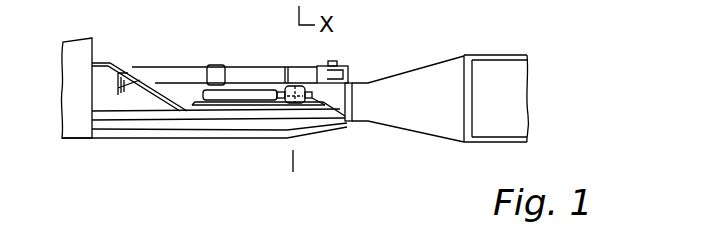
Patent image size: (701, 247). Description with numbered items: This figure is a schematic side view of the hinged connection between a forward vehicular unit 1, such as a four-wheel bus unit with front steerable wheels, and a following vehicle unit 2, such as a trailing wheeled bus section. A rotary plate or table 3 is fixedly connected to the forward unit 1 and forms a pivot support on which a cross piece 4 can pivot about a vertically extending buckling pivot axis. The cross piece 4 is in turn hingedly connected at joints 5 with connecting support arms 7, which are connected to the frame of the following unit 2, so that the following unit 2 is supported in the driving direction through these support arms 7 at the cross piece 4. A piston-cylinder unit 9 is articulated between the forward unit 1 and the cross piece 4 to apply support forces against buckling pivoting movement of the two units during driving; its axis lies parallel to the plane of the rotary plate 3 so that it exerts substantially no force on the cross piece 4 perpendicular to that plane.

The forward vehicular unit 1 is at (79, 127).
The following vehicle unit 2 is at (497, 120).
The rotary plate 3 is at (252, 104).
The cross piece 4 is at (243, 90).
The joints 5 is at (294, 86).
The connecting support arms 7 is at (417, 85).
The piston-cylinder unit 9 is at (173, 72).